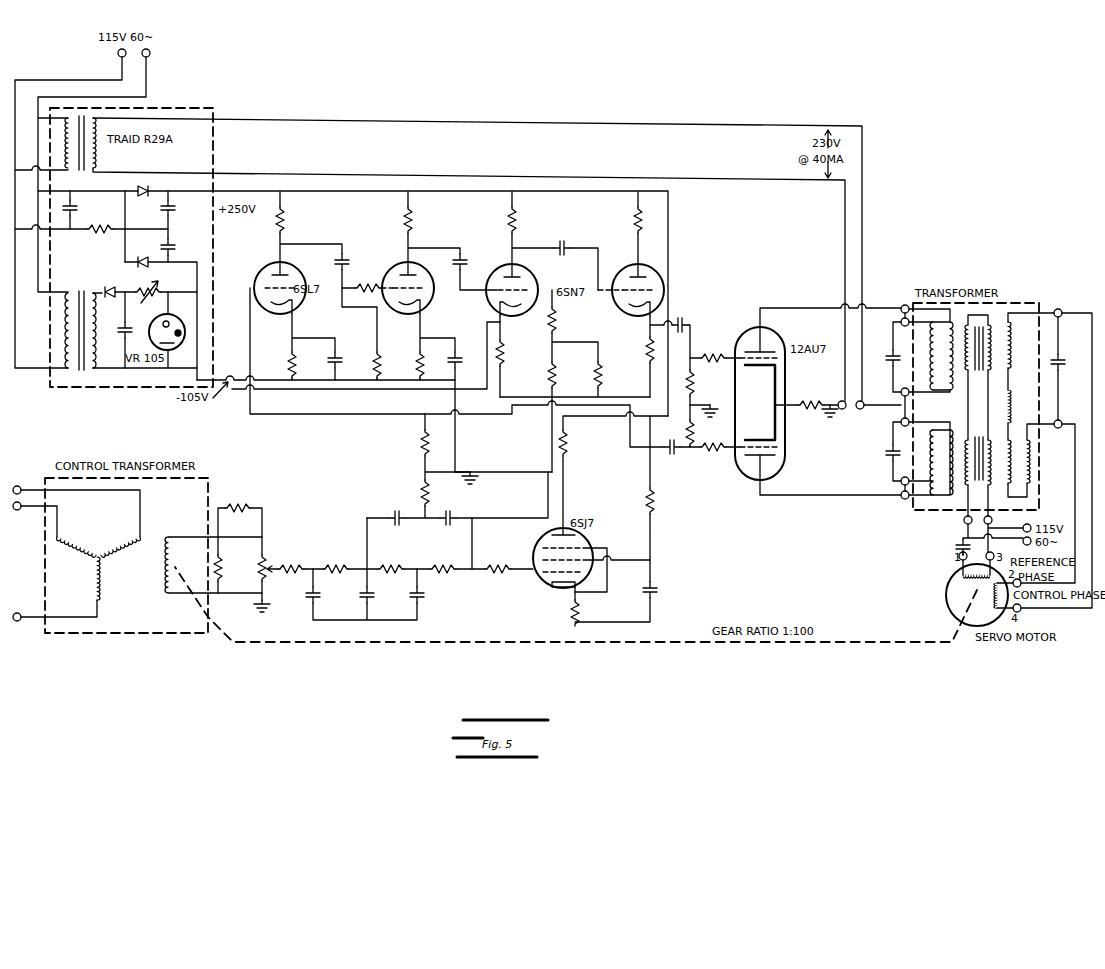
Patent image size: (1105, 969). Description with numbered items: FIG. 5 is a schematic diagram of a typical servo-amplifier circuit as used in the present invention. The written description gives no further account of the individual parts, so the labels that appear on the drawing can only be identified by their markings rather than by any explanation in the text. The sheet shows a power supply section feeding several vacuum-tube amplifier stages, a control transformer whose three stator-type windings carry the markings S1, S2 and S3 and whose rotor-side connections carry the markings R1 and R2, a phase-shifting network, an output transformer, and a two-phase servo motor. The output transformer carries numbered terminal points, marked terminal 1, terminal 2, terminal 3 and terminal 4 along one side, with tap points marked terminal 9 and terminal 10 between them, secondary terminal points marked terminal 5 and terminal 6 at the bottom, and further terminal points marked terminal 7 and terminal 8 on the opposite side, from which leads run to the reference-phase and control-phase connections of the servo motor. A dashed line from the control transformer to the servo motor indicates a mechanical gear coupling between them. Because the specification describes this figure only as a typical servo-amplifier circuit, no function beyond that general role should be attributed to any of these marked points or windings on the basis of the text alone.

The transformer primary terminal 1 is at (904, 302).
The transformer primary terminal 2 is at (904, 384).
The transformer primary terminal 3 is at (904, 430).
The transformer primary terminal 4 is at (903, 502).
The transformer secondary terminal 5 is at (963, 520).
The transformer secondary terminal 6 is at (993, 520).
The transformer winding terminal 7 is at (1058, 306).
The transformer winding terminal 8 is at (1058, 432).
The transformer primary tap terminal 9 is at (904, 329).
The transformer primary tap terminal 10 is at (902, 474).
The control transformer stator winding S1 is at (76, 536).
The control transformer stator winding S2 is at (121, 536).
The control transformer stator winding S3 is at (107, 588).
The control transformer rotor winding terminal R1 is at (213, 557).
The control transformer rotor winding terminal R2 is at (211, 600).